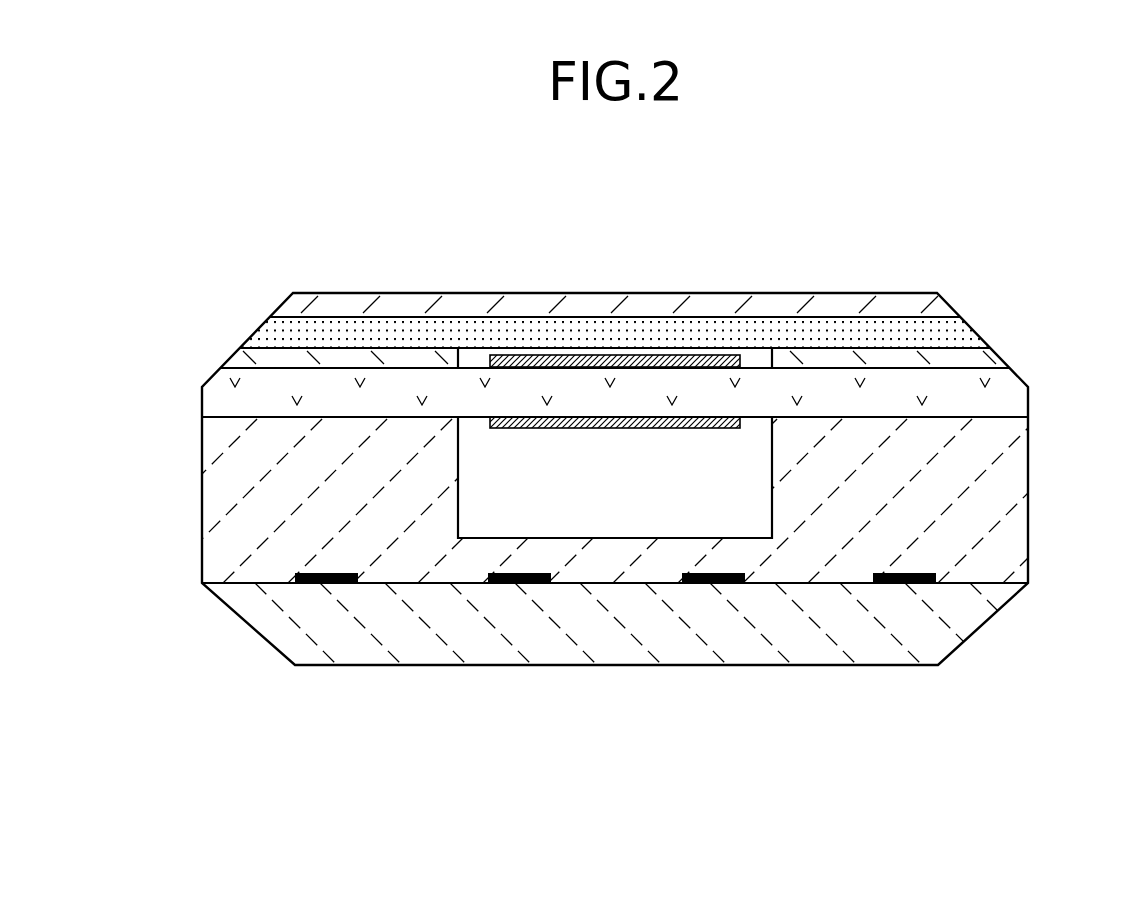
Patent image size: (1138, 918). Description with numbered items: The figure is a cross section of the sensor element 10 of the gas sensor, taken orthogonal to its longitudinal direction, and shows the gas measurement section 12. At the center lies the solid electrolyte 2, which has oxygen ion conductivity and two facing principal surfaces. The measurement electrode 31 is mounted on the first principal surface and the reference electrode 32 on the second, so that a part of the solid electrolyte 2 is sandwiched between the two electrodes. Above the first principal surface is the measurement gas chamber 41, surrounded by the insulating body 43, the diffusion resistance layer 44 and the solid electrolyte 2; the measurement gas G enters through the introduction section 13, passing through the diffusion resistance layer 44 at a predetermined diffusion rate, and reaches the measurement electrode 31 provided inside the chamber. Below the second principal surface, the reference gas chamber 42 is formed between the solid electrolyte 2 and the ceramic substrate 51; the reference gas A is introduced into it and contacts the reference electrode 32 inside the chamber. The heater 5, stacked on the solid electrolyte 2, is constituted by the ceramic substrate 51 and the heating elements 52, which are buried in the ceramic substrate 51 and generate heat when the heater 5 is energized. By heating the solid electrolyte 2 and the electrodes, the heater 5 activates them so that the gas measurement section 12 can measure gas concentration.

The solid electrolyte 2 is at (647, 400).
The heater 5 is at (903, 664).
The sensor element 10 is at (632, 285).
The gas measurement section 12 is at (988, 275).
The introduction section 13 is at (316, 320).
The measurement electrode 31 is at (605, 355).
The reference electrode 32 is at (575, 429).
The measurement gas chamber 41 is at (748, 355).
The reference gas chamber 42 is at (649, 508).
The insulating body 43 is at (412, 308).
The diffusion resistance layer 44 is at (822, 330).
The ceramic substrate 51 is at (967, 522).
The heating elements 52 is at (708, 584).
The reference gas A is at (495, 497).
The measurement gas G is at (472, 352).